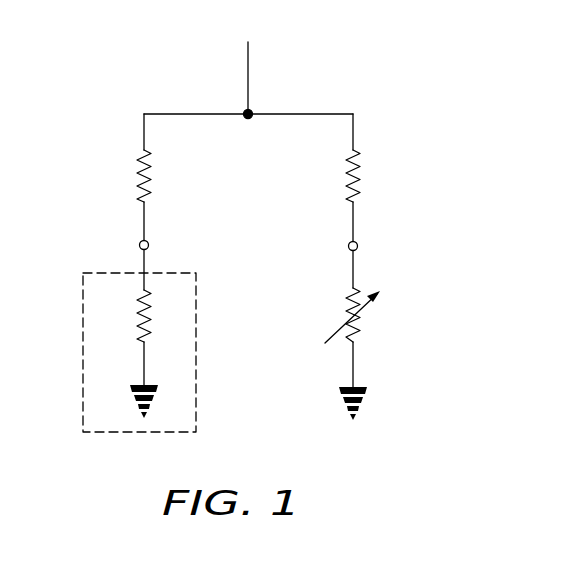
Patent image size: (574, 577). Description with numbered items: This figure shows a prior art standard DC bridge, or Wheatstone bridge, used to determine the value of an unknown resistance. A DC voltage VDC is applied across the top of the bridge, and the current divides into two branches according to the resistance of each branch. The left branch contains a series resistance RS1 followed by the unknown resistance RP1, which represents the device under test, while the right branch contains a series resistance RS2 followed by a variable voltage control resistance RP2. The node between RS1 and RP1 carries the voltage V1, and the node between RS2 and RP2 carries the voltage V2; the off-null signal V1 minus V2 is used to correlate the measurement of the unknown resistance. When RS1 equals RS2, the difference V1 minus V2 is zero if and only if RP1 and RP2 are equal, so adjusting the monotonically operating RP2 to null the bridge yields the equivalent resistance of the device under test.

The DC voltage VDC is at (248, 59).
The first series resistance RS1 is at (123, 176).
The second series resistance RS2 is at (376, 176).
The first bridge voltage V1 is at (129, 247).
The second bridge voltage V2 is at (369, 248).
The unknown resistance RP1 is at (180, 352).
The voltage control resistance RP2 is at (371, 354).